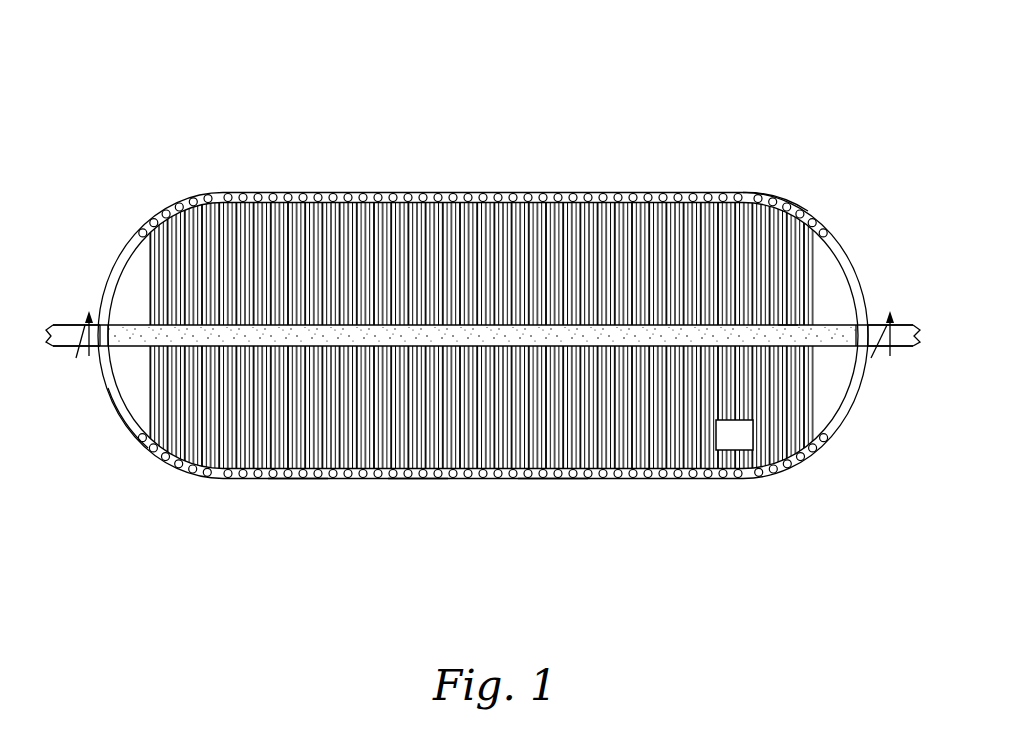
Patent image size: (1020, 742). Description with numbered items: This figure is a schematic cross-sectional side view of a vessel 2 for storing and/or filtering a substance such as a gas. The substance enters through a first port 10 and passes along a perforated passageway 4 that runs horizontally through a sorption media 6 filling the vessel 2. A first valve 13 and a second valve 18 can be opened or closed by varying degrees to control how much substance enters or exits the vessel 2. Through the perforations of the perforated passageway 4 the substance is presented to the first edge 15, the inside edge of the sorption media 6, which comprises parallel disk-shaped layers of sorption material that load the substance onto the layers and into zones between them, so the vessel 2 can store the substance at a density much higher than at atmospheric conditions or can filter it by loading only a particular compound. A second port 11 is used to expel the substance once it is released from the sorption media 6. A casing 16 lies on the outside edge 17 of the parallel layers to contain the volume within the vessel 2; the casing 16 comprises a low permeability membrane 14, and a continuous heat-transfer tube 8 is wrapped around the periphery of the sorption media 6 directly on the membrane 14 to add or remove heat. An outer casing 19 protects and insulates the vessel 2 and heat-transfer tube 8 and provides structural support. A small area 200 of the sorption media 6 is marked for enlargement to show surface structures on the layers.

The vessel 2 is at (329, 83).
The perforated passageway 4 is at (132, 323).
The sorption media 6 is at (574, 222).
The heat-transfer tube 8 is at (281, 473).
The first port 10 is at (48, 338).
The second port 11 is at (903, 316).
The first valve 13 is at (70, 350).
The low permeability membrane 14 is at (410, 473).
The first edge 15 is at (781, 317).
The casing 16 is at (121, 410).
The outside edge 17 is at (733, 186).
The second valve 18 is at (880, 350).
The outer casing 19 is at (541, 473).
The area 200 is at (731, 445).